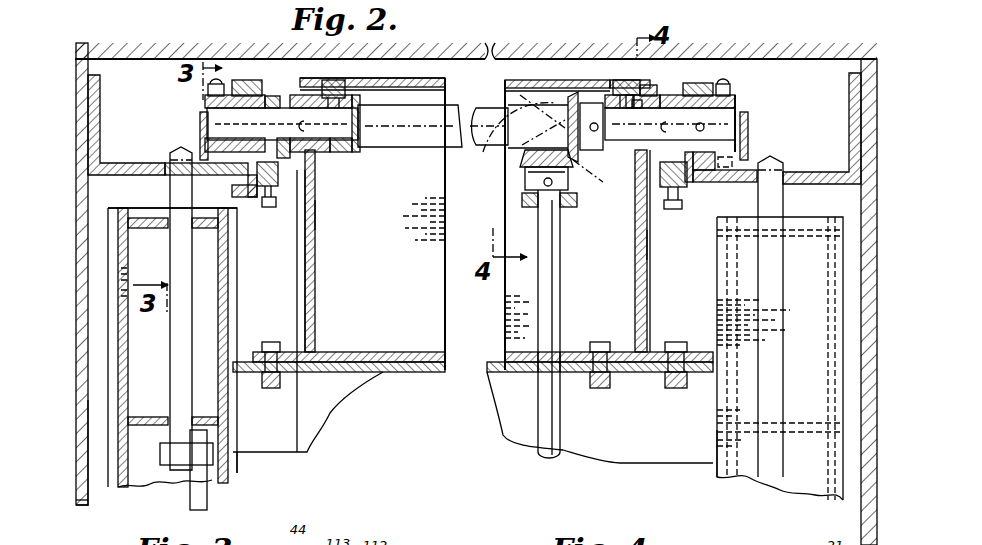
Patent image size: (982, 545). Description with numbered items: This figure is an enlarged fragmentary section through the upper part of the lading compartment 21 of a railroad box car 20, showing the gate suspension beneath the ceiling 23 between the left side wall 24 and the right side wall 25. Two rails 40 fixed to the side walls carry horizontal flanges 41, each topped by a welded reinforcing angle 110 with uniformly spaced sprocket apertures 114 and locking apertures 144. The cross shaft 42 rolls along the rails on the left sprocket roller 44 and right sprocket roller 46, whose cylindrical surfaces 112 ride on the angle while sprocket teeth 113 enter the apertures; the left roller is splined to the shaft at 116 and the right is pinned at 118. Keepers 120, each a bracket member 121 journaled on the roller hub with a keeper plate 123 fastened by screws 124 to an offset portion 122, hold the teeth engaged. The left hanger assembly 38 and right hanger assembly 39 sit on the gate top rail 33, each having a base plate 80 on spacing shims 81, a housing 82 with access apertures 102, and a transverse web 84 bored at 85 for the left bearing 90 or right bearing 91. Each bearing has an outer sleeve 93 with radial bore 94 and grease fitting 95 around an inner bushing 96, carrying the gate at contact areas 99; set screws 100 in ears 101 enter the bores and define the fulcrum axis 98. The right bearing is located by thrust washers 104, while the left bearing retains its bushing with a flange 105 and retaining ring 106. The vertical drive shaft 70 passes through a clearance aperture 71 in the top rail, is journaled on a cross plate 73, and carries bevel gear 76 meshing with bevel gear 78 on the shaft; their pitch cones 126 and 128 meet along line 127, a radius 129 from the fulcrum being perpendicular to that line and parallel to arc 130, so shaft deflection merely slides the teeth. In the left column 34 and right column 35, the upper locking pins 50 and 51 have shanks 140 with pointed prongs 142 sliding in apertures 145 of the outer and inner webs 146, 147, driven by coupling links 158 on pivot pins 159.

The railroad box car 20 is at (78, 504).
The lading compartment 21 is at (75, 342).
The ceiling 23 is at (143, 58).
The left side wall 24 is at (78, 438).
The right side wall 25 is at (861, 505).
The top rail 33 is at (298, 415).
The left vertical column 34 is at (240, 462).
The right vertical column 35 is at (713, 470).
The left hanger assembly 38 is at (303, 319).
The right hanger assembly 39 is at (504, 321).
The rail 40 is at (102, 118).
The horizontal flange 41 is at (226, 176).
The cross shaft 42 is at (405, 146).
The left sprocket roller 44 is at (293, 28).
The right sprocket roller 46 is at (744, 107).
The left upper locking pin 50 is at (167, 405).
The right upper locking pin 51 is at (783, 372).
The vertical drive shaft 70 is at (561, 288).
The clearance aperture 71 is at (561, 372).
The cross plate 73 is at (572, 207).
The bevel gear 76 is at (525, 180).
The bevel gear 78 is at (572, 95).
The base plate 80 is at (405, 352).
The spacing shim 81 is at (428, 373).
The housing 82 is at (443, 80).
The vertical transverse web 84 is at (300, 256).
The web bore 85 is at (317, 166).
The left bearing 90 is at (335, 152).
The right bearing 91 is at (662, 95).
The outer sleeve 93 is at (285, 154).
The radial bore 94 is at (355, 112).
The grease fitting 95 is at (308, 126).
The inner bushing 96 is at (345, 155).
The fulcrum axis 98 is at (330, 81).
The area of contact 99 is at (655, 95).
The set screw 100 is at (695, 20).
The ear 101 is at (372, 92).
The access aperture 102 is at (340, 80).
The thrust washer 104 is at (617, 80).
The flange 105 is at (356, 152).
The retaining ring 106 is at (266, 100).
The reinforcing angle 110 is at (200, 122).
The cylindrical surface 112 is at (205, 100).
The sprocket tooth 113 is at (222, 82).
The sprocket aperture 114 is at (204, 148).
The spline 116 is at (240, 116).
The pin 118 is at (706, 127).
The keeper 120 is at (266, 208).
The bracket member 121 is at (260, 84).
The offset portion 122 is at (312, 196).
The keeper plate 123 is at (248, 198).
The screw 124 is at (265, 206).
The pitch cone 126 is at (540, 147).
The pitch cone intersection line 127 is at (562, 79).
The pitch cone 128 is at (578, 92).
The radius 129 is at (594, 150).
The arc 130 is at (560, 162).
The shank 140 is at (168, 370).
The pointed prong 142 is at (168, 157).
The locking aperture 144 is at (170, 186).
The aperture 145 is at (186, 229).
The outer horizontal web 146 is at (166, 425).
The inner horizontal web 147 is at (182, 229).
The coupling link 158 is at (208, 500).
The pivot pin 159 is at (215, 455).